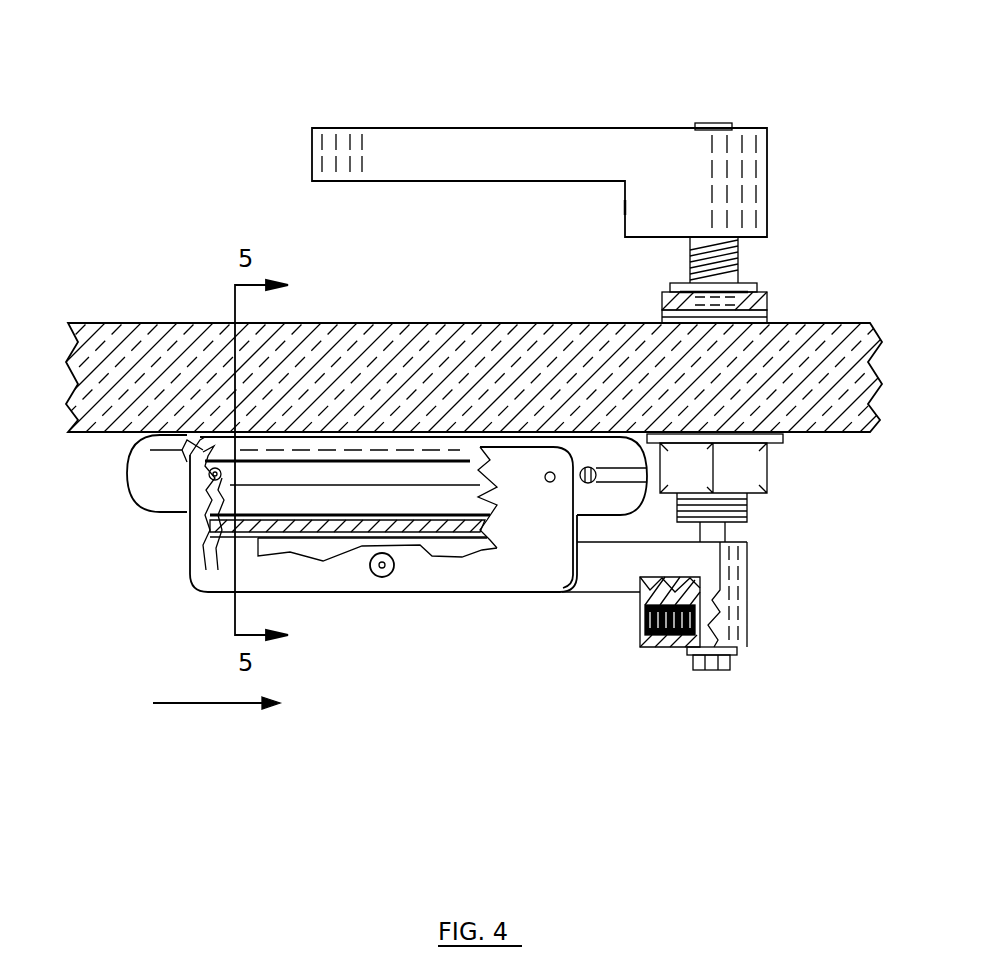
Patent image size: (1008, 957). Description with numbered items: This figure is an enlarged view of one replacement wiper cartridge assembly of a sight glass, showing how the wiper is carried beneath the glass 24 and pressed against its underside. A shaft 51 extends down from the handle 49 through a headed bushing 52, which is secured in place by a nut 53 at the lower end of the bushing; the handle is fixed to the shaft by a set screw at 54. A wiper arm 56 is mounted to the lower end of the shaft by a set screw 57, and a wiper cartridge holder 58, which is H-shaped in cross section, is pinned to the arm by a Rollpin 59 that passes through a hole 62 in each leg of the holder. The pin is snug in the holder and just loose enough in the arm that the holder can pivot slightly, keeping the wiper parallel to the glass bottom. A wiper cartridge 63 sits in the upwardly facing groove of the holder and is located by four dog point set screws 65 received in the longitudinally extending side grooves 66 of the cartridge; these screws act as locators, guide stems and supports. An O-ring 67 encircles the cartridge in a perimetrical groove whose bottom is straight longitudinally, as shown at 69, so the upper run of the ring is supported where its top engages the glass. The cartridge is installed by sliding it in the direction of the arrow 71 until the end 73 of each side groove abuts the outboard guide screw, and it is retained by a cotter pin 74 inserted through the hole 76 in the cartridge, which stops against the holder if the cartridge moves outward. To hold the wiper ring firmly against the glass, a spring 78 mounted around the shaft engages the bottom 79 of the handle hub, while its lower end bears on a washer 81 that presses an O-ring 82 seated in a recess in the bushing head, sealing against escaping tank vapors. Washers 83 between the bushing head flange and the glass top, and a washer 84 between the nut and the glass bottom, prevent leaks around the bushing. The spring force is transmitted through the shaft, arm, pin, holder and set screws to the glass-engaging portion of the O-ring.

The glass 24 is at (488, 331).
The handle 49 is at (403, 147).
The shaft 51 is at (706, 121).
The headed bushing 52 is at (766, 303).
The nut 53 is at (753, 466).
The set screw 54 is at (622, 208).
The wiper arm 56 is at (597, 578).
The set screw 57 is at (642, 628).
The wiper cartridge holder 58 is at (236, 544).
The Rollpin 59 is at (374, 578).
The hole 62 is at (384, 578).
The wiper cartridge 63 is at (146, 498).
The dog point set screws 65 is at (211, 476).
The side grooves 66 is at (292, 478).
The O-ring 67 is at (340, 450).
The bottom of the groove 69 is at (233, 452).
The arrow 71 is at (205, 704).
The end of side groove 73 is at (206, 482).
The cotter pin 74 is at (597, 484).
The hole 76 is at (568, 500).
The spring 78 is at (740, 275).
The bottom of the handle hub portion 79 is at (643, 236).
The washer 81 is at (758, 287).
The O-ring 82 is at (683, 294).
The washers 83 is at (668, 325).
The washer 84 is at (790, 447).